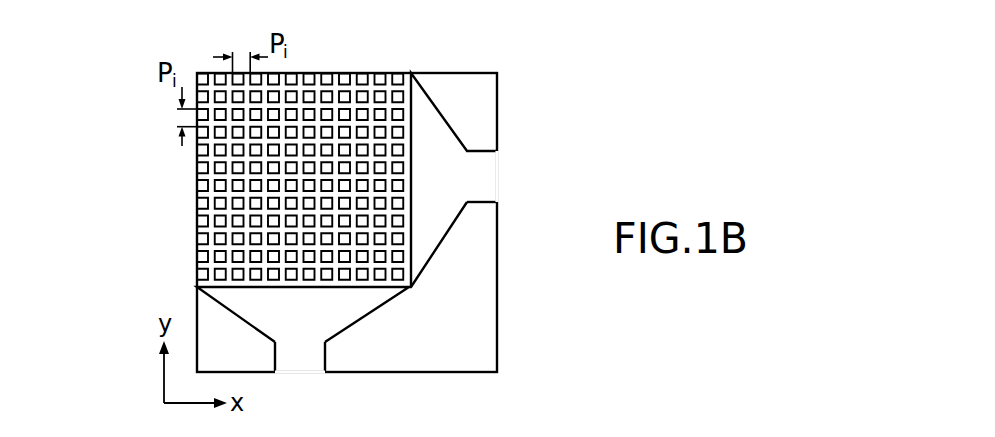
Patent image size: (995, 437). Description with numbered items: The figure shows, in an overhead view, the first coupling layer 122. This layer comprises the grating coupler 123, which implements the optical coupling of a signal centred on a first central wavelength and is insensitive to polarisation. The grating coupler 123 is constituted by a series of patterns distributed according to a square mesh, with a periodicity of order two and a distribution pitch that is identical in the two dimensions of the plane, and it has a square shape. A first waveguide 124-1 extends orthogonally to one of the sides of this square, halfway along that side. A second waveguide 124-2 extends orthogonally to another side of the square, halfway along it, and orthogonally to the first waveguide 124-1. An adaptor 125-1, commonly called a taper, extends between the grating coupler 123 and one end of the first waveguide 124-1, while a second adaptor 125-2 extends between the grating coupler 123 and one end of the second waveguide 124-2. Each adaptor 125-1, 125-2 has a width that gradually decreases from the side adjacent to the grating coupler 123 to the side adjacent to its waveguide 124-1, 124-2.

The first coupling layer 122 is at (608, 103).
The grating coupler 123 is at (157, 188).
The adaptor 125-1 is at (432, 118).
The first waveguide 124-1 is at (490, 168).
The adaptor 125-2 is at (362, 300).
The second waveguide 124-2 is at (310, 357).